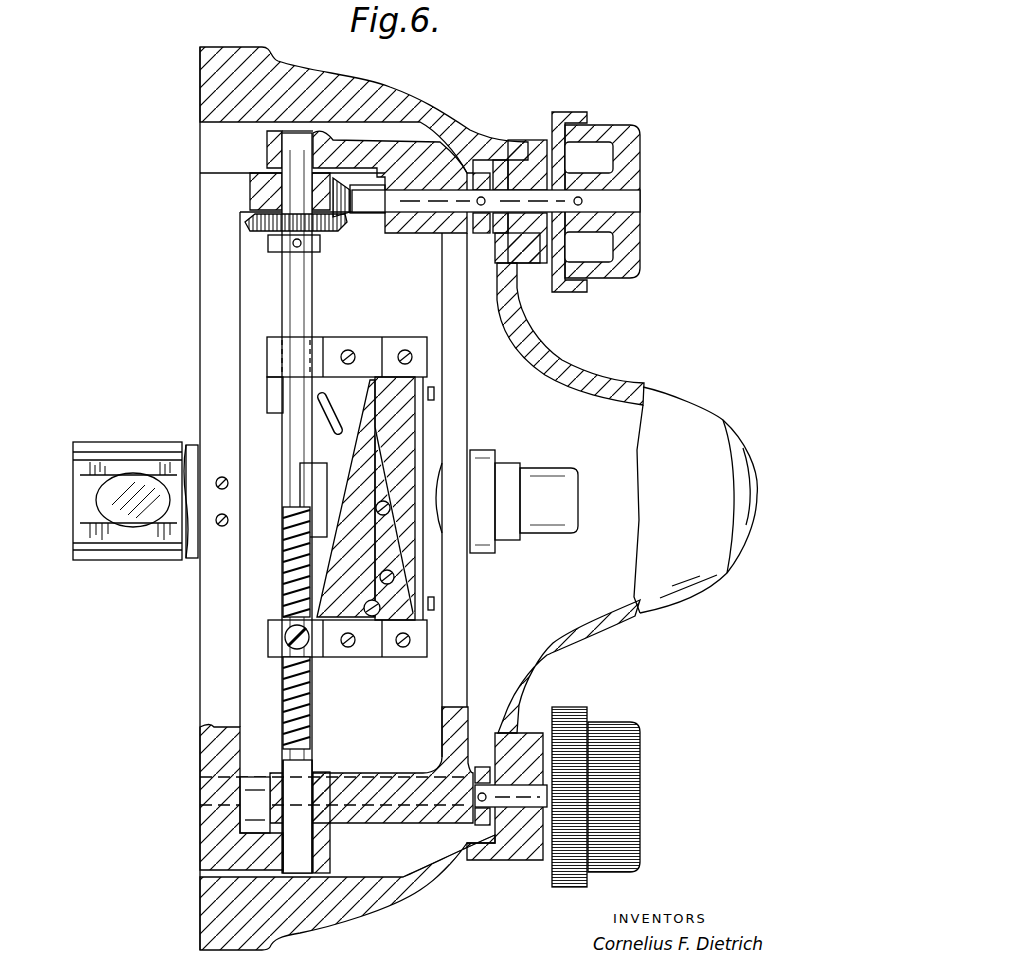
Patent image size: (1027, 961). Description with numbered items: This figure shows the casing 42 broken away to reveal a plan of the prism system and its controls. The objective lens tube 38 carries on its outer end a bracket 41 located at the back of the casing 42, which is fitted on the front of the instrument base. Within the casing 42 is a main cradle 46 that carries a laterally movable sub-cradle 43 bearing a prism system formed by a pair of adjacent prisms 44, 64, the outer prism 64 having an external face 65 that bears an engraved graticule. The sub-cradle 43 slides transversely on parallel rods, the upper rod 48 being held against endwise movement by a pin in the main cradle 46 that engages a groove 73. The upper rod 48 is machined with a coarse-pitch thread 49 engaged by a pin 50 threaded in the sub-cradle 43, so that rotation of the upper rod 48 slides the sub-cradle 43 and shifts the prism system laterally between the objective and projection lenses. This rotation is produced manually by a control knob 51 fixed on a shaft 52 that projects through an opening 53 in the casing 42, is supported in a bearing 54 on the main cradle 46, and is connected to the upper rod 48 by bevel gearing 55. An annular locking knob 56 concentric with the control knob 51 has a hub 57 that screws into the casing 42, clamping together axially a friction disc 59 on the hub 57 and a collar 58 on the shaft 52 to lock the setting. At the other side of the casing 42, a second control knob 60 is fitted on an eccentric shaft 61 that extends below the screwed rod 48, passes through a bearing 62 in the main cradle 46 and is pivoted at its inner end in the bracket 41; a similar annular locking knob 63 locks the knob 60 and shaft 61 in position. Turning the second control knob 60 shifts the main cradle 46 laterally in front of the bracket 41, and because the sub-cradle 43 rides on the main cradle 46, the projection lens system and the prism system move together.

The tube 38 is at (150, 452).
The bracket 41 is at (223, 851).
The casing 42 is at (223, 893).
The sub-cradle 43 is at (377, 650).
The prism 44 is at (334, 660).
The main cradle 46 is at (453, 745).
The upper rod 48 is at (280, 287).
The coarse-pitch thread 49 is at (282, 567).
The pin 50 is at (290, 648).
The control knob 51 is at (637, 167).
The shaft 52 is at (455, 178).
The opening 53 is at (530, 173).
The bearing 54 is at (470, 183).
The bevel gearing 55 is at (350, 223).
The annular locking knob 56 is at (573, 122).
The hub 57 is at (540, 268).
The collar 58 is at (447, 247).
The friction disc 59 is at (493, 243).
The second control knob 60 is at (638, 838).
The eccentric shaft 61 is at (425, 840).
The bearing 62 is at (470, 870).
The annular locking knob 63 is at (572, 885).
The outer prism 64 is at (421, 622).
The external face 65 is at (417, 448).
The groove 73 is at (297, 147).